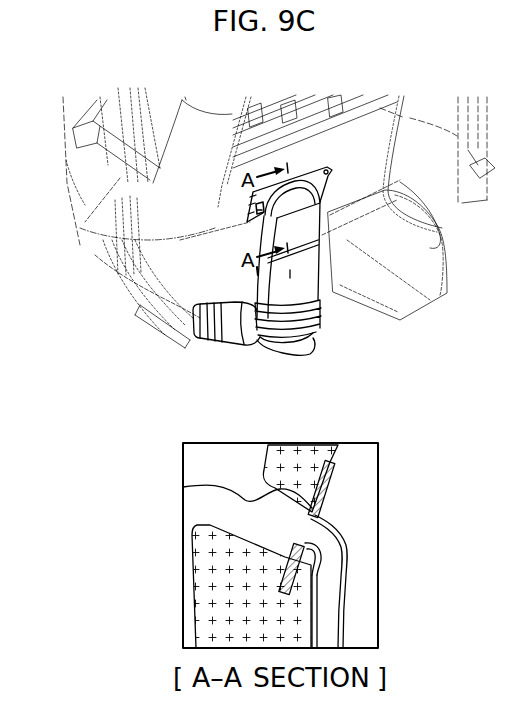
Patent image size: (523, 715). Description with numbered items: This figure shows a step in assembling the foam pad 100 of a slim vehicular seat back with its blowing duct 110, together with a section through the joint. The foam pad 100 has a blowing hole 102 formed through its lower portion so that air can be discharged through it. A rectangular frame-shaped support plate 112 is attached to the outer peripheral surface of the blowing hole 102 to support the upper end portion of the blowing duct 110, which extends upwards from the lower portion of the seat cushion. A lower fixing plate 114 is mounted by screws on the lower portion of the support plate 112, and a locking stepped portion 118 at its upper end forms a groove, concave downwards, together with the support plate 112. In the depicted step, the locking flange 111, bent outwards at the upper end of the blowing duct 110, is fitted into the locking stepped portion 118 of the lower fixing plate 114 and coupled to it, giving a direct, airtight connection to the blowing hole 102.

The foam pad 100 is at (246, 207).
The blowing hole 102 is at (183, 487).
The blowing duct 110 is at (305, 257).
The locking flange 111 is at (322, 560).
The support plate 112 is at (326, 171).
The lower fixing plate 114 is at (246, 216).
The locking stepped portion 118 is at (315, 578).